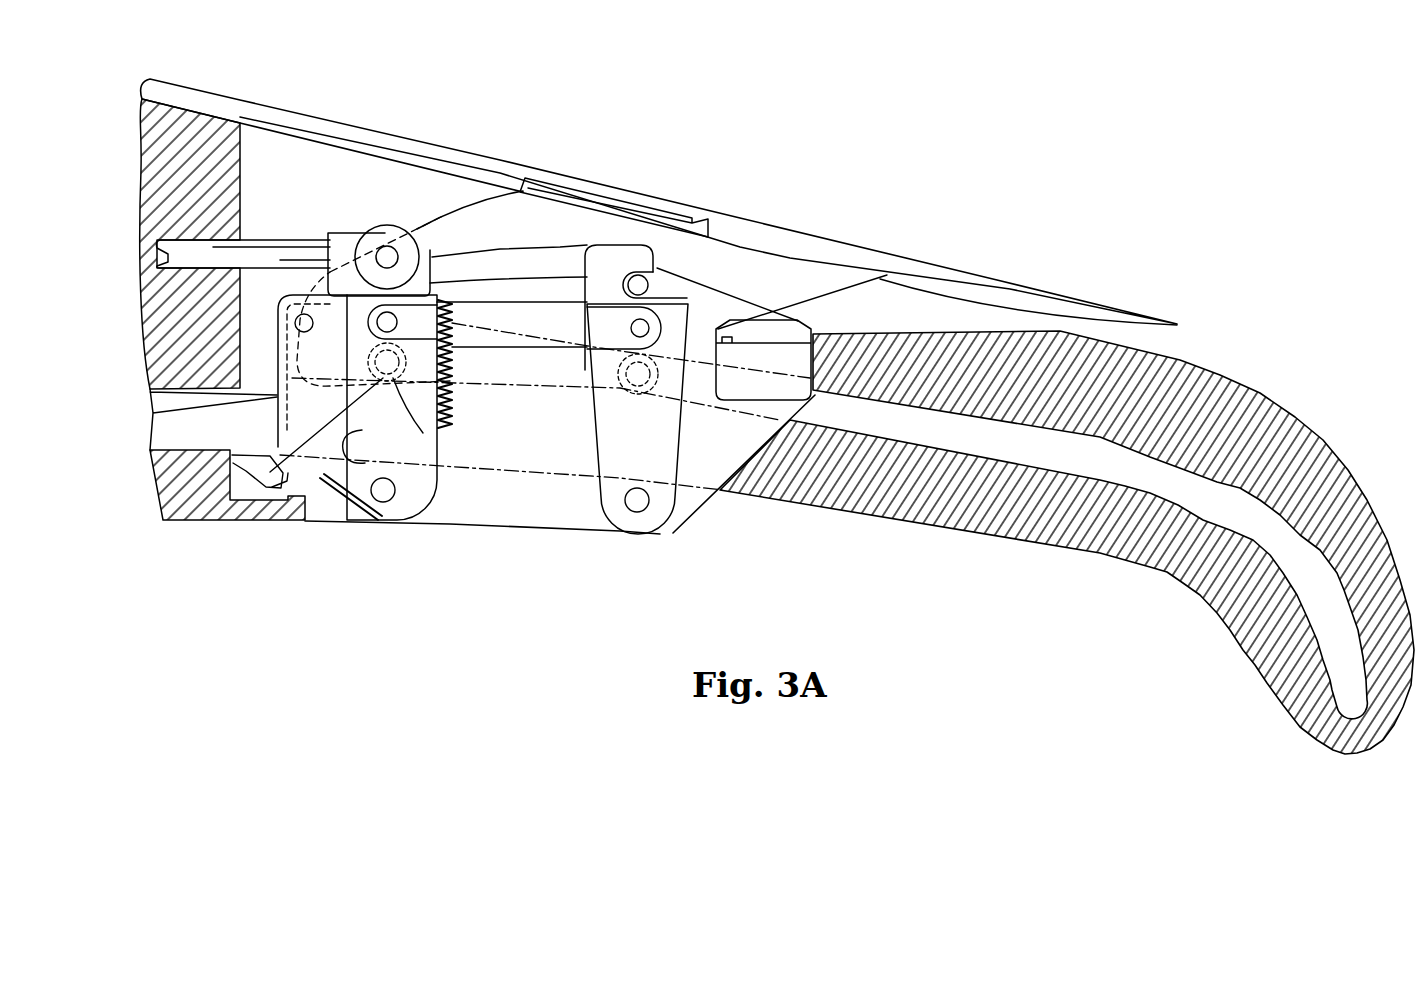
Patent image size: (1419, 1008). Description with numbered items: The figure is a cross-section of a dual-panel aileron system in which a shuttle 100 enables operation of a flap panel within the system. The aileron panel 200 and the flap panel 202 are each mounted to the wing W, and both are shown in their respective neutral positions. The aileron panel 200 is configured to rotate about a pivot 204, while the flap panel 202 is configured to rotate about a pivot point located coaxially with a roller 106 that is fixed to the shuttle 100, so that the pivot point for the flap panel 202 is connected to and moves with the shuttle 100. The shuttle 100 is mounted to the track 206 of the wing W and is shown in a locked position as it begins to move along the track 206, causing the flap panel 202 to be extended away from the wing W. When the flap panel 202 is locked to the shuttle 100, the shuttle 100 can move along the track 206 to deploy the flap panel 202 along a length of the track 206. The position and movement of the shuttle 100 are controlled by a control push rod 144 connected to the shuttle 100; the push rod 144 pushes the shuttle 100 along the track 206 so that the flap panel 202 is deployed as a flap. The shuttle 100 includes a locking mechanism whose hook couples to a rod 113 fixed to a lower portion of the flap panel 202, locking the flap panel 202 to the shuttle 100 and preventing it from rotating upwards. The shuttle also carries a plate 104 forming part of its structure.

The wing W is at (200, 127).
The aileron panel 200 is at (857, 260).
The flap panel 202 is at (912, 308).
The pivot 204 is at (607, 193).
The track 206 is at (1317, 597).
The shuttle 100 is at (549, 564).
The plate 104 is at (638, 392).
The roller 106 is at (424, 436).
The rod 113 is at (655, 284).
The control push rod 144 is at (272, 262).